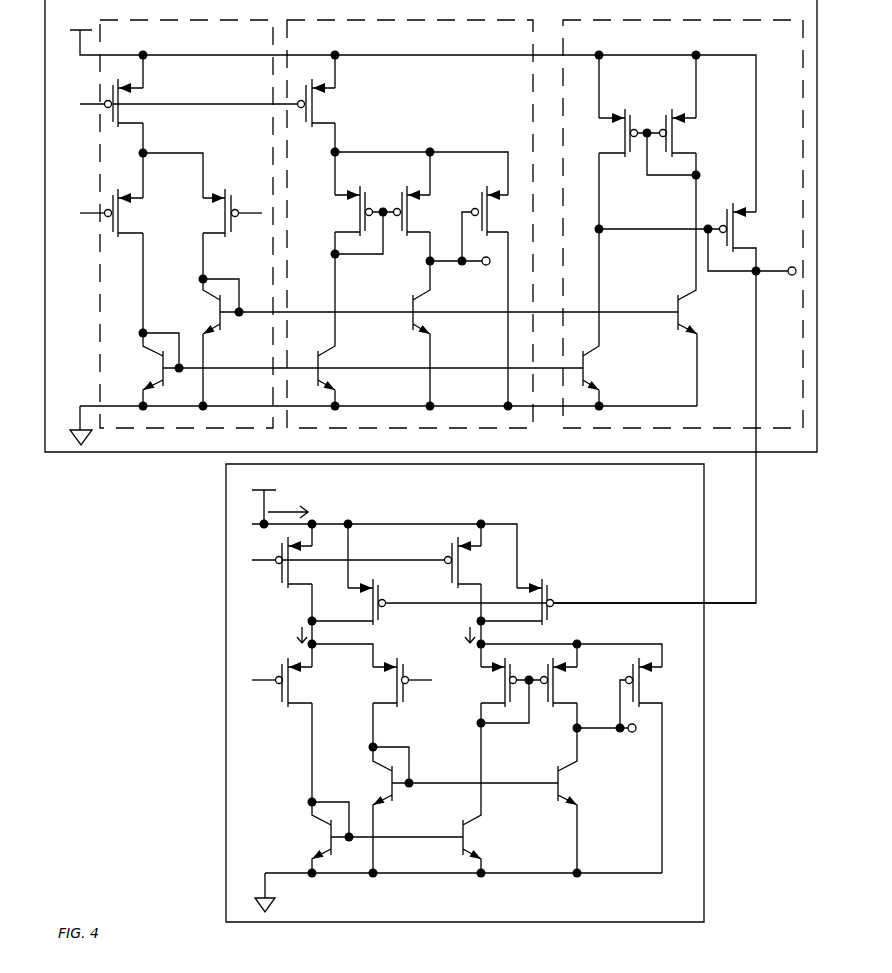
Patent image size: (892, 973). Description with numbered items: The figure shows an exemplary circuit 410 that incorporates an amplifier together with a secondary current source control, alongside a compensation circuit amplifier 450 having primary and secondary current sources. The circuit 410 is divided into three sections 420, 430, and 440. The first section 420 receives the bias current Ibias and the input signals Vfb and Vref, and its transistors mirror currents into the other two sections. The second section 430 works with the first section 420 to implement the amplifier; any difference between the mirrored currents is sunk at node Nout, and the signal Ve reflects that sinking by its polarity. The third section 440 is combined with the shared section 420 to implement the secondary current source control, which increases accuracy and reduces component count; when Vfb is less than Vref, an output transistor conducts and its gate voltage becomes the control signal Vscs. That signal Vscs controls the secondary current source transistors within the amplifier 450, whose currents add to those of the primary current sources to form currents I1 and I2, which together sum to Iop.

The circuit 410 is at (431, 301).
The section 420 is at (186, 224).
The section 430 is at (410, 224).
The section 440 is at (683, 224).
The compensation circuit amplifier 450 is at (491, 693).